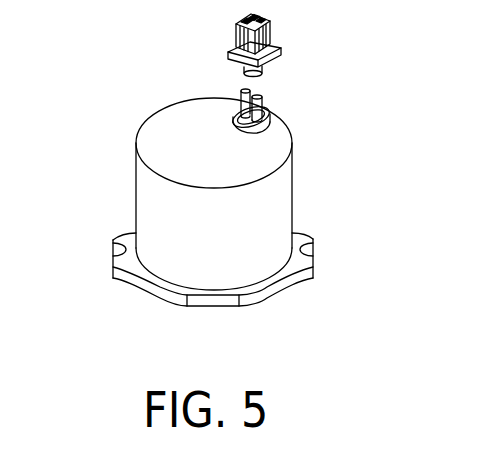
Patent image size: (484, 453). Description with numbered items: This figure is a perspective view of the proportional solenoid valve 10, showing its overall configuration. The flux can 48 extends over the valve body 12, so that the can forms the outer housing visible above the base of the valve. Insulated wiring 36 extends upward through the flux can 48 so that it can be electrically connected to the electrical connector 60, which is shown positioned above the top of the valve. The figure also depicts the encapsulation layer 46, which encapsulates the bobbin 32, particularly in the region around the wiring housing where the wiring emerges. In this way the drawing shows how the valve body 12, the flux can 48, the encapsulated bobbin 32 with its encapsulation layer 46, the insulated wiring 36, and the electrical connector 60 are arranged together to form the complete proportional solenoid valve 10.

The proportional solenoid valve 10 is at (358, 113).
The valve body 12 is at (212, 308).
The bobbin 32 is at (276, 122).
The insulated wiring 36 is at (238, 104).
The encapsulation layer 46 is at (270, 112).
The flux can 48 is at (148, 196).
The electrical connector 60 is at (231, 42).